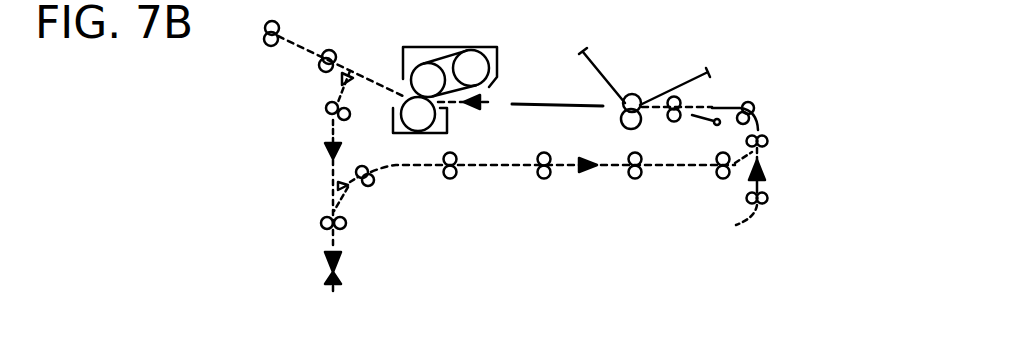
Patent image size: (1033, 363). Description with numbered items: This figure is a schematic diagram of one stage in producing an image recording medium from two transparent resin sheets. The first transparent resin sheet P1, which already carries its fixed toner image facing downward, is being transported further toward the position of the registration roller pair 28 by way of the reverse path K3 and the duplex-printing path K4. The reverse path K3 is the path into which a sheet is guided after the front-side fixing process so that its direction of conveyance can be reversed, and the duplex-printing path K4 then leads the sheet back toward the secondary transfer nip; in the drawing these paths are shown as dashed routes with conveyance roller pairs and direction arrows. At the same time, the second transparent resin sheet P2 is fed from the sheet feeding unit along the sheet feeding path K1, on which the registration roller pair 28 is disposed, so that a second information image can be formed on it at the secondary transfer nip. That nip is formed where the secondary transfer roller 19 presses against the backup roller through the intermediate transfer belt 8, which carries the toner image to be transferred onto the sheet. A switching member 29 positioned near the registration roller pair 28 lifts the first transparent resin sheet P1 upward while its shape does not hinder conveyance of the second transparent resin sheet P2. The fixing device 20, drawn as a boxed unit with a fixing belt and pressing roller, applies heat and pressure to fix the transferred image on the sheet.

The fixing device 20 is at (510, 52).
The intermediate transfer belt 8 is at (590, 65).
The secondary transfer roller 19 is at (620, 126).
The registration roller pair 28 is at (673, 89).
The switching member 29 is at (712, 126).
The first transparent resin sheet P1 is at (528, 105).
The second transparent resin sheet P2 is at (762, 120).
The sheet feeding path K1 is at (766, 181).
The reverse path K3 is at (331, 131).
The duplex-printing path K4 is at (508, 172).